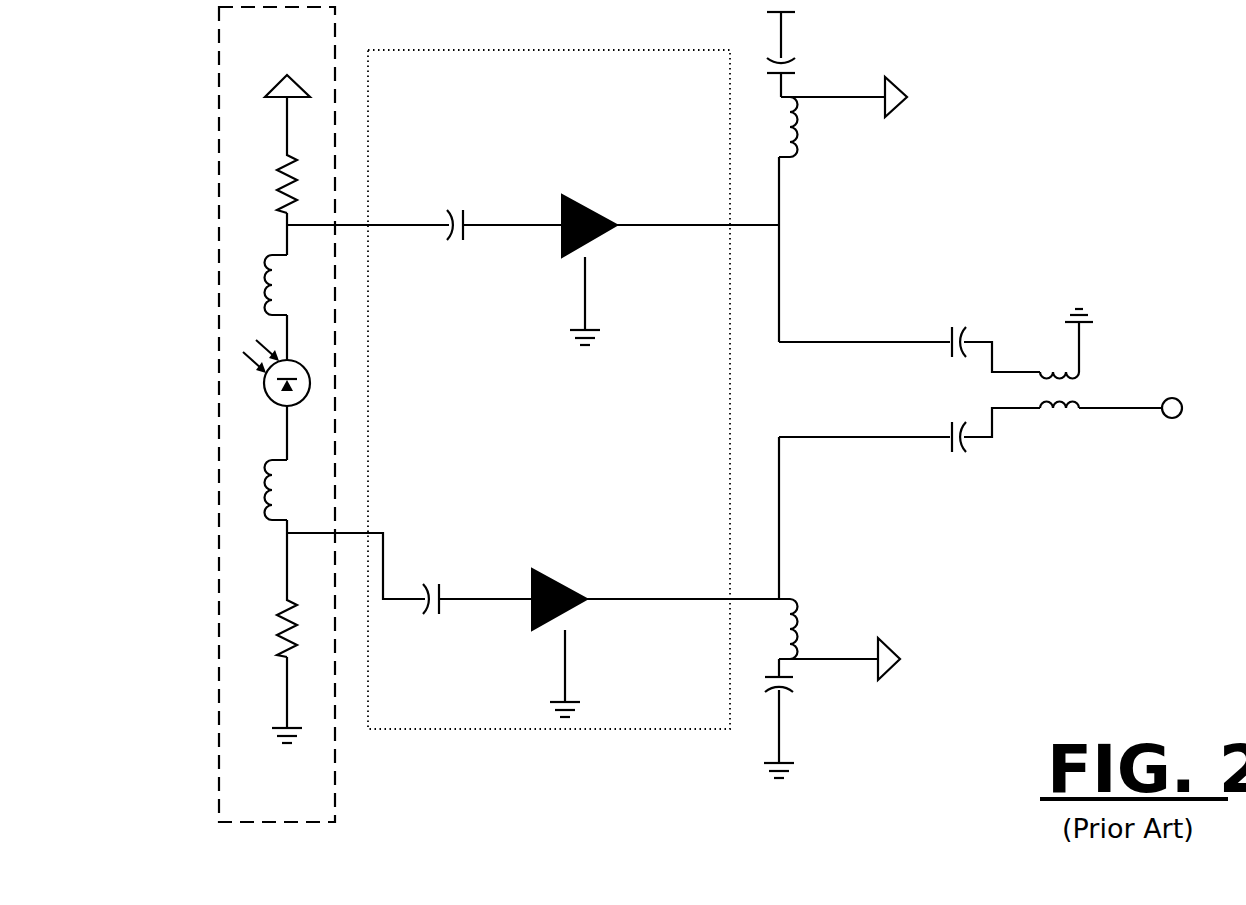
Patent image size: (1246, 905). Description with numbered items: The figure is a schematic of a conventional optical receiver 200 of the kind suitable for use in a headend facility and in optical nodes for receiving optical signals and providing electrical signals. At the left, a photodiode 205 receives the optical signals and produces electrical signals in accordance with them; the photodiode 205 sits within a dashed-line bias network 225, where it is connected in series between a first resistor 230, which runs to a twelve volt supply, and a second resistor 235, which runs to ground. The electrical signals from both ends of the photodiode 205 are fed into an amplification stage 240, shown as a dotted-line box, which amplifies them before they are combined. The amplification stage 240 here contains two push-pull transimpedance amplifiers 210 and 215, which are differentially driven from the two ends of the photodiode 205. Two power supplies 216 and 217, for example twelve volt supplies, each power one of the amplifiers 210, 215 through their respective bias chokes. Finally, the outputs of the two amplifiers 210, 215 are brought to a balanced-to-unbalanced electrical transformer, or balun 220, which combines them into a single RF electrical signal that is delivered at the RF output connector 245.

The optical receiver 200 is at (1229, 169).
The photodiode 205 is at (270, 398).
The push-pull transimpedance amplifier 210 is at (592, 212).
The push-pull transimpedance amplifier 215 is at (565, 588).
The power supply 216 is at (895, 80).
The power supply 217 is at (893, 672).
The balun 220 is at (1059, 410).
The photodiode bias network 225 is at (335, 752).
The first bias resistor 230 is at (282, 168).
The second bias resistor 235 is at (282, 632).
The amplification stage 240 is at (614, 745).
The RF output connector 245 is at (1179, 398).